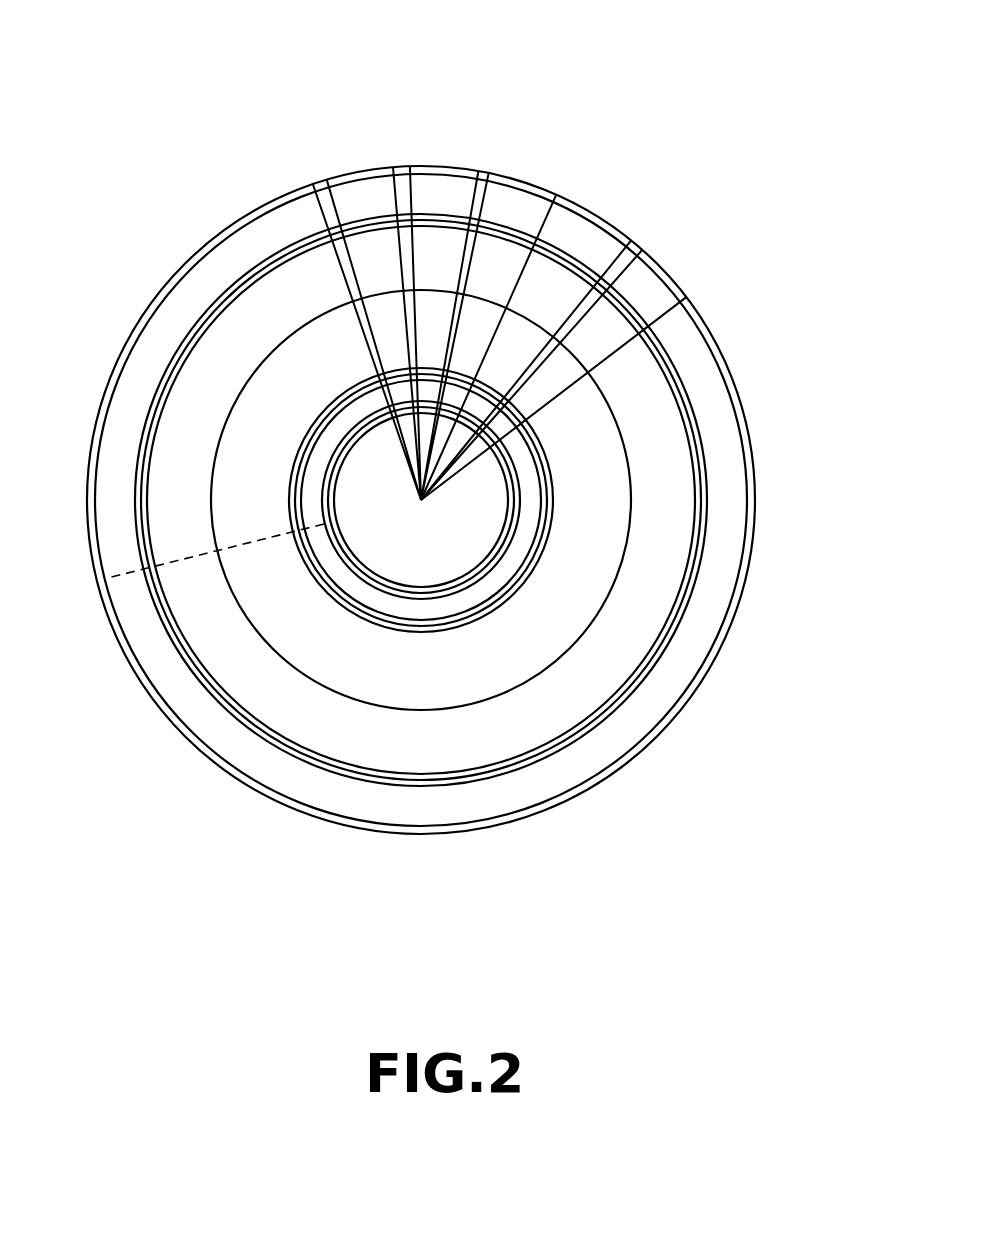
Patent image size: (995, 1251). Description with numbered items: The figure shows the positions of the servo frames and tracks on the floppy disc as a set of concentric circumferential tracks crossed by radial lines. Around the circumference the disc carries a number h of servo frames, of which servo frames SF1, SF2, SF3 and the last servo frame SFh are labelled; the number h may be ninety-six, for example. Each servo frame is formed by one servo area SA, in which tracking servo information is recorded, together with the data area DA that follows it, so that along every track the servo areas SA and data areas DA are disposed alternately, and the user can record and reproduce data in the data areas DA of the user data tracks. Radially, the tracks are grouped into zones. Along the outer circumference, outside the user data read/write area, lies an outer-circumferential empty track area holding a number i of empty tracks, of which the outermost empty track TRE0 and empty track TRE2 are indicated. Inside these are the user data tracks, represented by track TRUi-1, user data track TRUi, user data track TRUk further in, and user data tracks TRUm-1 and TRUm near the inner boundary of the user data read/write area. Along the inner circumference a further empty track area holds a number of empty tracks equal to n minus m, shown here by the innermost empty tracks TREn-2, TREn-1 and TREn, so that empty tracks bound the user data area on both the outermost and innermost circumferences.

The servo frame SFh is at (345, 55).
The servo frame SF1 is at (470, 80).
The servo frame SF2 is at (600, 102).
The servo frame SF3 is at (775, 181).
The servo area SA is at (327, 203).
The data area DA is at (367, 250).
The user data track TRUk is at (613, 417).
The user data track TRUi is at (695, 424).
The user data track TRUi-1 is at (708, 458).
The empty track TRE2 is at (747, 550).
The empty track TRE0 is at (735, 620).
The empty track TREn is at (345, 543).
The empty track TREn-1 is at (359, 569).
The empty track TREn-2 is at (400, 597).
The user data track TRUm is at (465, 622).
The user data track TRUm-1 is at (506, 601).